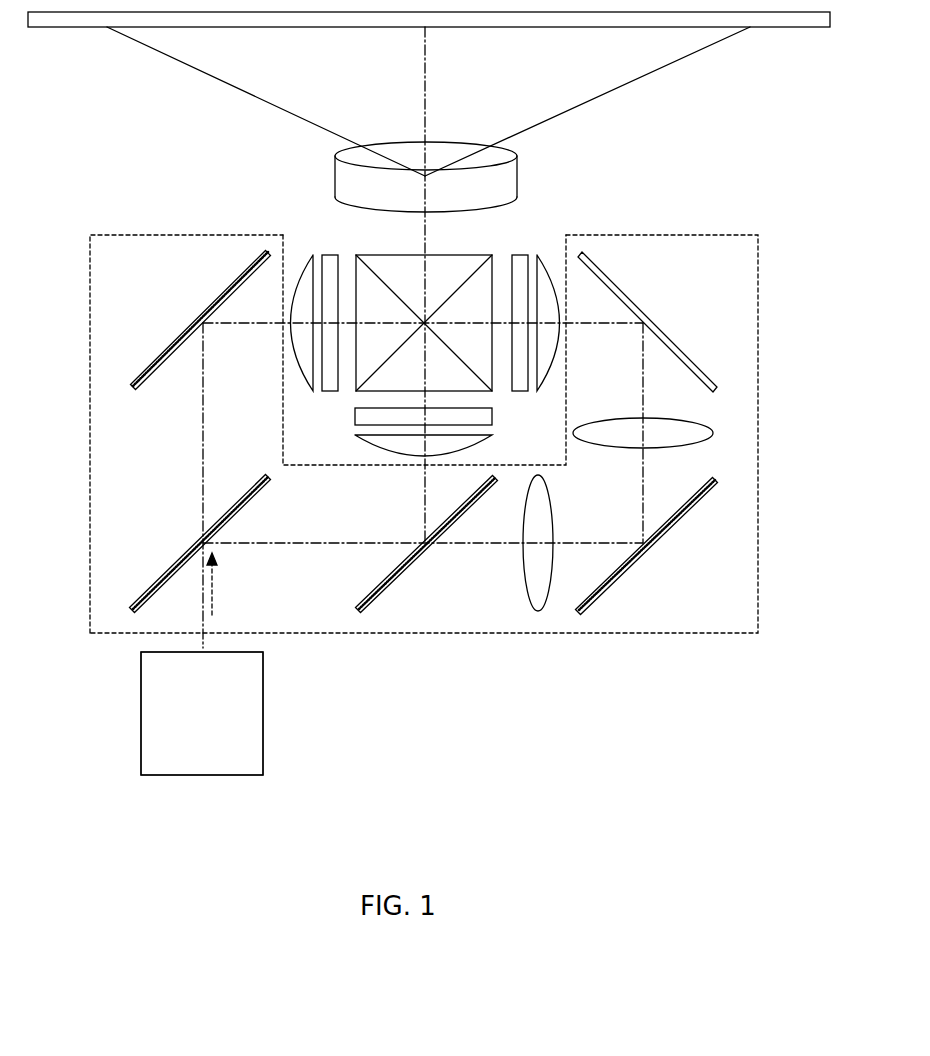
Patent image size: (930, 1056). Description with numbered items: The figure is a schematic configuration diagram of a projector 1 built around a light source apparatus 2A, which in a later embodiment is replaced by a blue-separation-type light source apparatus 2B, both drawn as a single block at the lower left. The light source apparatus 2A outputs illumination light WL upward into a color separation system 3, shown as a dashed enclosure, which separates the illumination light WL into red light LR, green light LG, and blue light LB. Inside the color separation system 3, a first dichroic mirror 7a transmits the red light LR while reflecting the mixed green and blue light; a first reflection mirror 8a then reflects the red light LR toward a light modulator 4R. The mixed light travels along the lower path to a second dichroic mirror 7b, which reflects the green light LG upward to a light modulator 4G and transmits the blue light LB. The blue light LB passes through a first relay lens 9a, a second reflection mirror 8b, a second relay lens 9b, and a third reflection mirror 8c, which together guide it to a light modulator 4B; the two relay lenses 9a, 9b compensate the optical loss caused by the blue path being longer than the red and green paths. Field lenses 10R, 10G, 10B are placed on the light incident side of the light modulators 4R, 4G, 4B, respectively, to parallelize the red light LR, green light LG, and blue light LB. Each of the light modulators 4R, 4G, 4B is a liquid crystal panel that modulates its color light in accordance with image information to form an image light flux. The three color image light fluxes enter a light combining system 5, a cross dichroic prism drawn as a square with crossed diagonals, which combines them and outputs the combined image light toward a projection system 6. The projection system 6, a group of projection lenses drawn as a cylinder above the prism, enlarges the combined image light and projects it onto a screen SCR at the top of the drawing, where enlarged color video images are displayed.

The screen SCR is at (792, 28).
The projector 1 is at (766, 217).
The light source apparatus 2A is at (263, 710).
The light source apparatus 2B is at (202, 713).
The color separation system 3 is at (90, 378).
The light modulator 4R is at (330, 253).
The light modulator 4G is at (355, 417).
The light modulator 4B is at (520, 253).
The light combining system 5 is at (447, 263).
The projection system 6 is at (407, 153).
The first dichroic mirror 7a is at (164, 575).
The second dichroic mirror 7b is at (402, 580).
The first reflection mirror 8a is at (182, 340).
The second reflection mirror 8b is at (675, 532).
The third reflection mirror 8c is at (676, 342).
The first relay lens 9a is at (523, 564).
The second relay lens 9b is at (700, 424).
The field lens 10R is at (308, 260).
The field lens 10G is at (355, 448).
The field lens 10B is at (543, 260).
The red light LR is at (203, 455).
The green light LG is at (423, 500).
The blue light LB is at (643, 493).
The illumination light WL is at (215, 592).